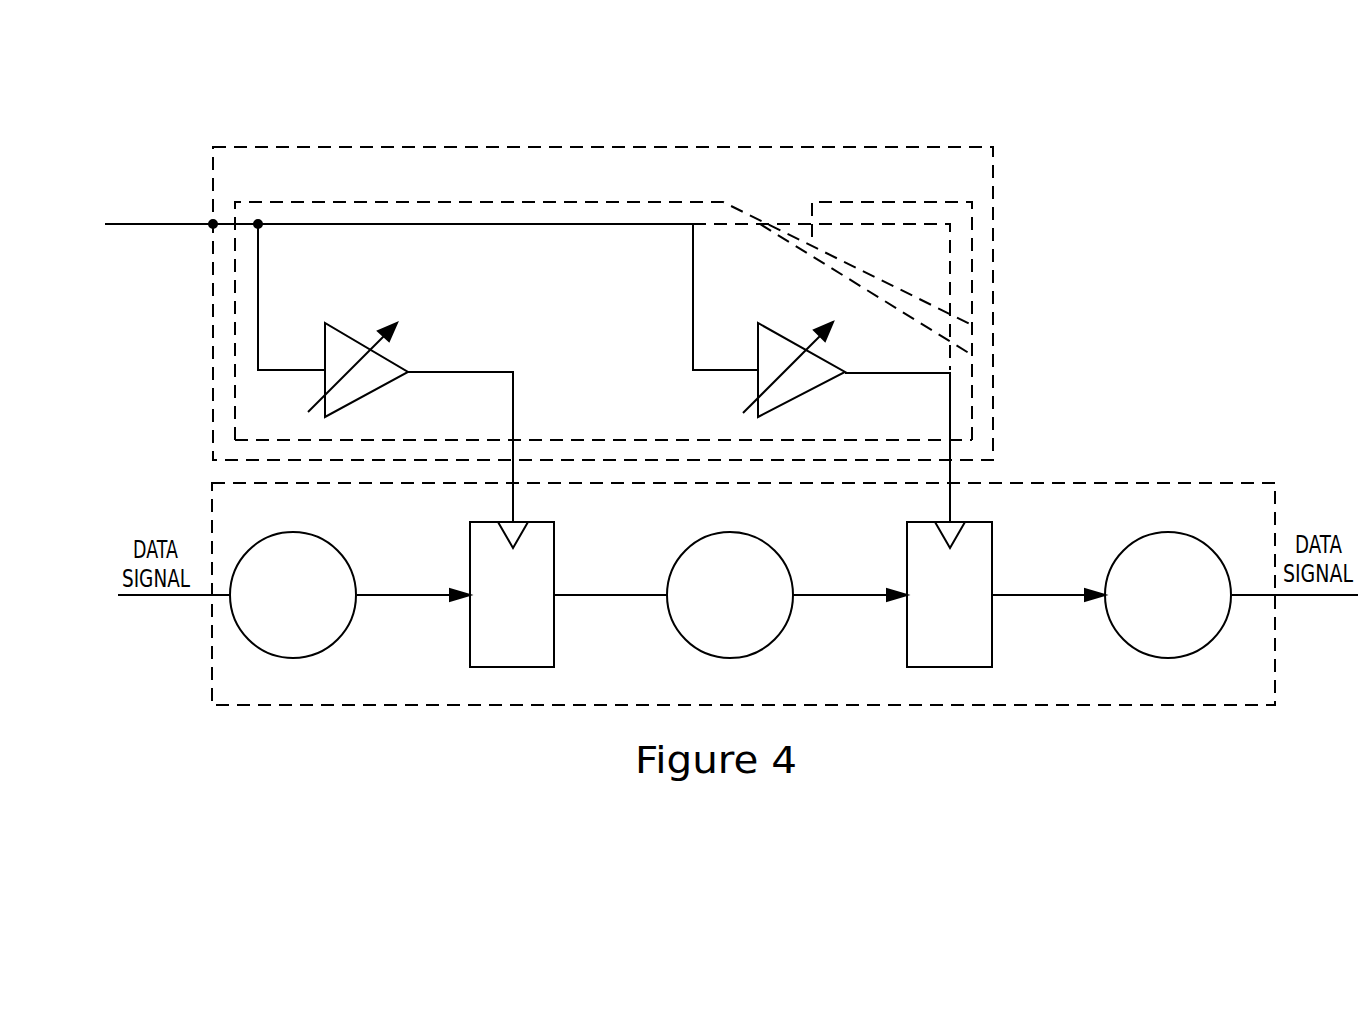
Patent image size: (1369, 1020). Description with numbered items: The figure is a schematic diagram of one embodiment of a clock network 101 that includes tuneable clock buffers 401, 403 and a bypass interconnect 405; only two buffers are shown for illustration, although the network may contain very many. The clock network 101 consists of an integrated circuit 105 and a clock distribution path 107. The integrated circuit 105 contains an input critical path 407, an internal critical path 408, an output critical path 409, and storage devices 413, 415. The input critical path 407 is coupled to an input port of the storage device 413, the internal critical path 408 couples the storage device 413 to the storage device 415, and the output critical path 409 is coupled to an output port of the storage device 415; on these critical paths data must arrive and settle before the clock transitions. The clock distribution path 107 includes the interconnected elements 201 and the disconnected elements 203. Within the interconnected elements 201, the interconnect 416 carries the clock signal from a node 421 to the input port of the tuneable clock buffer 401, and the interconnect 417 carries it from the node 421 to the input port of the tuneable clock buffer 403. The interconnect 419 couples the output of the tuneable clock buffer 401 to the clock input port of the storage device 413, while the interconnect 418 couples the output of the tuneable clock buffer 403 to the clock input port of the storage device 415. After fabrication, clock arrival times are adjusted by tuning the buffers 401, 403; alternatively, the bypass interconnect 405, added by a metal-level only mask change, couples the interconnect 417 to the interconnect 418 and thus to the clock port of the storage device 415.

The clock network 101 is at (1062, 117).
The integrated circuit 105 is at (1114, 483).
The clock distribution path 107 is at (995, 213).
The interconnected elements 201 is at (480, 205).
The disconnected elements 203 is at (880, 203).
The tuneable clock buffer 401 is at (368, 400).
The tuneable clock buffer 403 is at (800, 400).
The bypass interconnect 405 is at (896, 230).
The input critical path 407 is at (338, 640).
The internal critical path 408 is at (775, 640).
The output critical path 409 is at (1213, 640).
The storage device 413 is at (556, 550).
The storage device 415 is at (994, 550).
The interconnect 416 is at (260, 291).
The interconnect 417 is at (398, 228).
The interconnect 418 is at (893, 372).
The interconnect 419 is at (460, 372).
The node 421 is at (210, 229).